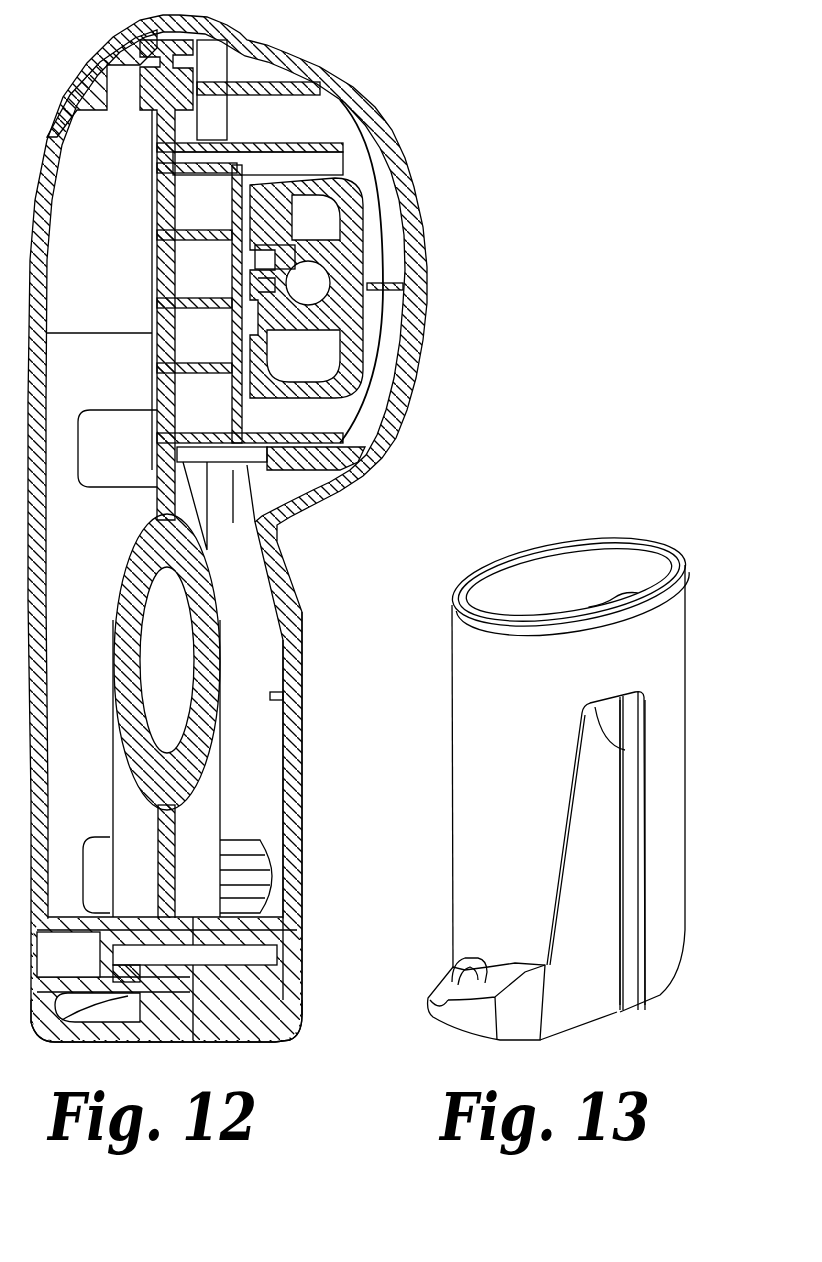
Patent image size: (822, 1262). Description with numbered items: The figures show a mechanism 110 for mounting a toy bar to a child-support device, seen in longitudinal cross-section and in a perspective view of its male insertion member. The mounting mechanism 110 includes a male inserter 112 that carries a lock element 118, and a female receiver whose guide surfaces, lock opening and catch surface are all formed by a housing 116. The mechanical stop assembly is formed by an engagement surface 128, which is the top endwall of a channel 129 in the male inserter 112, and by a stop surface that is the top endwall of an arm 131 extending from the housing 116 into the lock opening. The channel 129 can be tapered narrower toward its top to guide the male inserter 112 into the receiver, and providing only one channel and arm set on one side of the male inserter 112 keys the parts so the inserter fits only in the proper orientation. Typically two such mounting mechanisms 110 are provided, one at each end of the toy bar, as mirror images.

In FIG. 12, the mounting mechanism 110 is at (413, 463).
In FIG. 12, the male inserter 112 is at (352, 202).
In FIG. 13, the male inserter 112 is at (690, 548).
In FIG. 12, the housing 116 is at (317, 663).
In FIG. 13, the lock element 118 is at (445, 987).
In FIG. 13, the engagement surface 128 is at (625, 750).
In FIG. 12, the channel 129 is at (262, 257).
In FIG. 12, the arm 131 is at (273, 283).